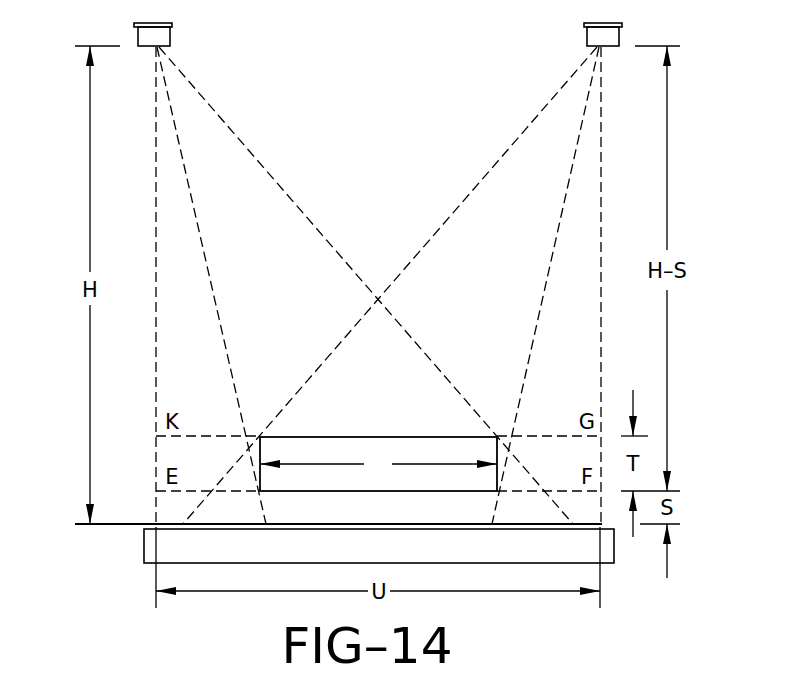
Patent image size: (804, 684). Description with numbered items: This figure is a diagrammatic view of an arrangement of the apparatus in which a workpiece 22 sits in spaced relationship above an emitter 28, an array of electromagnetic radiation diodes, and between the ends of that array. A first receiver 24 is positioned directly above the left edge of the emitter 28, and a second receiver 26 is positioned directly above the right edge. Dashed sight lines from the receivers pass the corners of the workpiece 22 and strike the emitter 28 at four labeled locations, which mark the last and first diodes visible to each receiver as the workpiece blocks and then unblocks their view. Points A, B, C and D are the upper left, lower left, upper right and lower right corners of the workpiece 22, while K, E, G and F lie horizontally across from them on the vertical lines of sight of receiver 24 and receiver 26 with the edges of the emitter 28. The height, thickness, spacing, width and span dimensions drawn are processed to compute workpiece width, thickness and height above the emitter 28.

The workpiece 22 is at (322, 437).
The first receiver 24 is at (139, 37).
The second receiver 26 is at (618, 37).
The emitter 28 is at (172, 524).